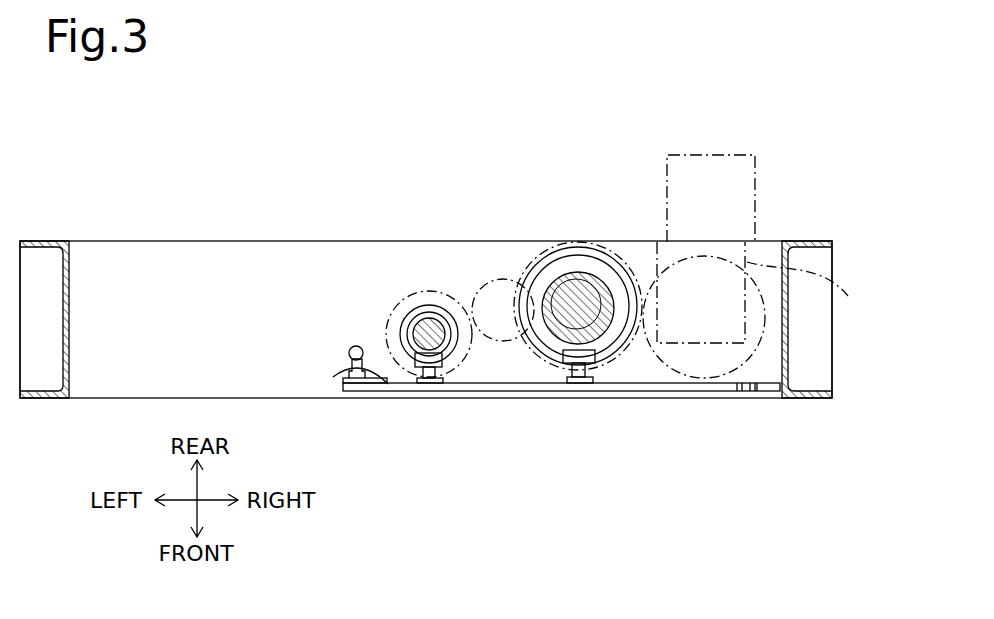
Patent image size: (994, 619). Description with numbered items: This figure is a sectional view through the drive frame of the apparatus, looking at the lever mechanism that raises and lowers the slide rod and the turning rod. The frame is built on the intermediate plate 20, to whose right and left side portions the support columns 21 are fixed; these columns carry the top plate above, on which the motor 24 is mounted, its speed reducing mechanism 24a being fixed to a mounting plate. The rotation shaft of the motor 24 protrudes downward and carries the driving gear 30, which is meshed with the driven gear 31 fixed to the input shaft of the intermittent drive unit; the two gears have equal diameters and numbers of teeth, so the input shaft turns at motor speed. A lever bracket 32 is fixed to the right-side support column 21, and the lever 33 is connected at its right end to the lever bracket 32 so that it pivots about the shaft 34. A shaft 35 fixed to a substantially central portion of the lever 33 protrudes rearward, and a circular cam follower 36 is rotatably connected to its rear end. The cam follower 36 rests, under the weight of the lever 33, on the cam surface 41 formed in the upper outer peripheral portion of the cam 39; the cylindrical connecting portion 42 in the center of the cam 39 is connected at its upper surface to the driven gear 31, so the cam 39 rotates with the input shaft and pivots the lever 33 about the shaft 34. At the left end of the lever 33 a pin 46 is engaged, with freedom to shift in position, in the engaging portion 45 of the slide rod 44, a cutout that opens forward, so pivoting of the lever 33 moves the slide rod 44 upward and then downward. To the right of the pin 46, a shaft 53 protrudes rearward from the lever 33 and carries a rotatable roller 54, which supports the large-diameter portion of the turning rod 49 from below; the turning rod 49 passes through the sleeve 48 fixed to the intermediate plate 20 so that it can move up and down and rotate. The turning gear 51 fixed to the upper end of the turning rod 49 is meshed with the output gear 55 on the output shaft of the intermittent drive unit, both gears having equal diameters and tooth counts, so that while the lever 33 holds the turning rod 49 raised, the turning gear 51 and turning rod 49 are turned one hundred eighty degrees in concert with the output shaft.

The intermediate plate 20 is at (162, 241).
The support columns 21 is at (45, 241).
The motor 24 is at (714, 152).
The speed reducing mechanism 24a is at (810, 294).
The driving gear 30 is at (700, 257).
The driven gear 31 is at (545, 272).
The lever bracket 32 is at (767, 391).
The lever 33 is at (660, 392).
The shaft 34 is at (737, 391).
The shaft 35 is at (565, 378).
The cam follower 36 is at (595, 357).
The cam 39 is at (612, 250).
The cam surface 41 is at (623, 302).
The connecting portion 42 is at (578, 262).
The slide rod 44 is at (356, 346).
The engaging portion 45 is at (347, 371).
The pin 46 is at (388, 385).
The sleeve 48 is at (418, 306).
The turning rod 49 is at (437, 318).
The turning gear 51 is at (397, 303).
The shaft 53 is at (436, 370).
The roller 54 is at (442, 358).
The output gear 55 is at (495, 272).